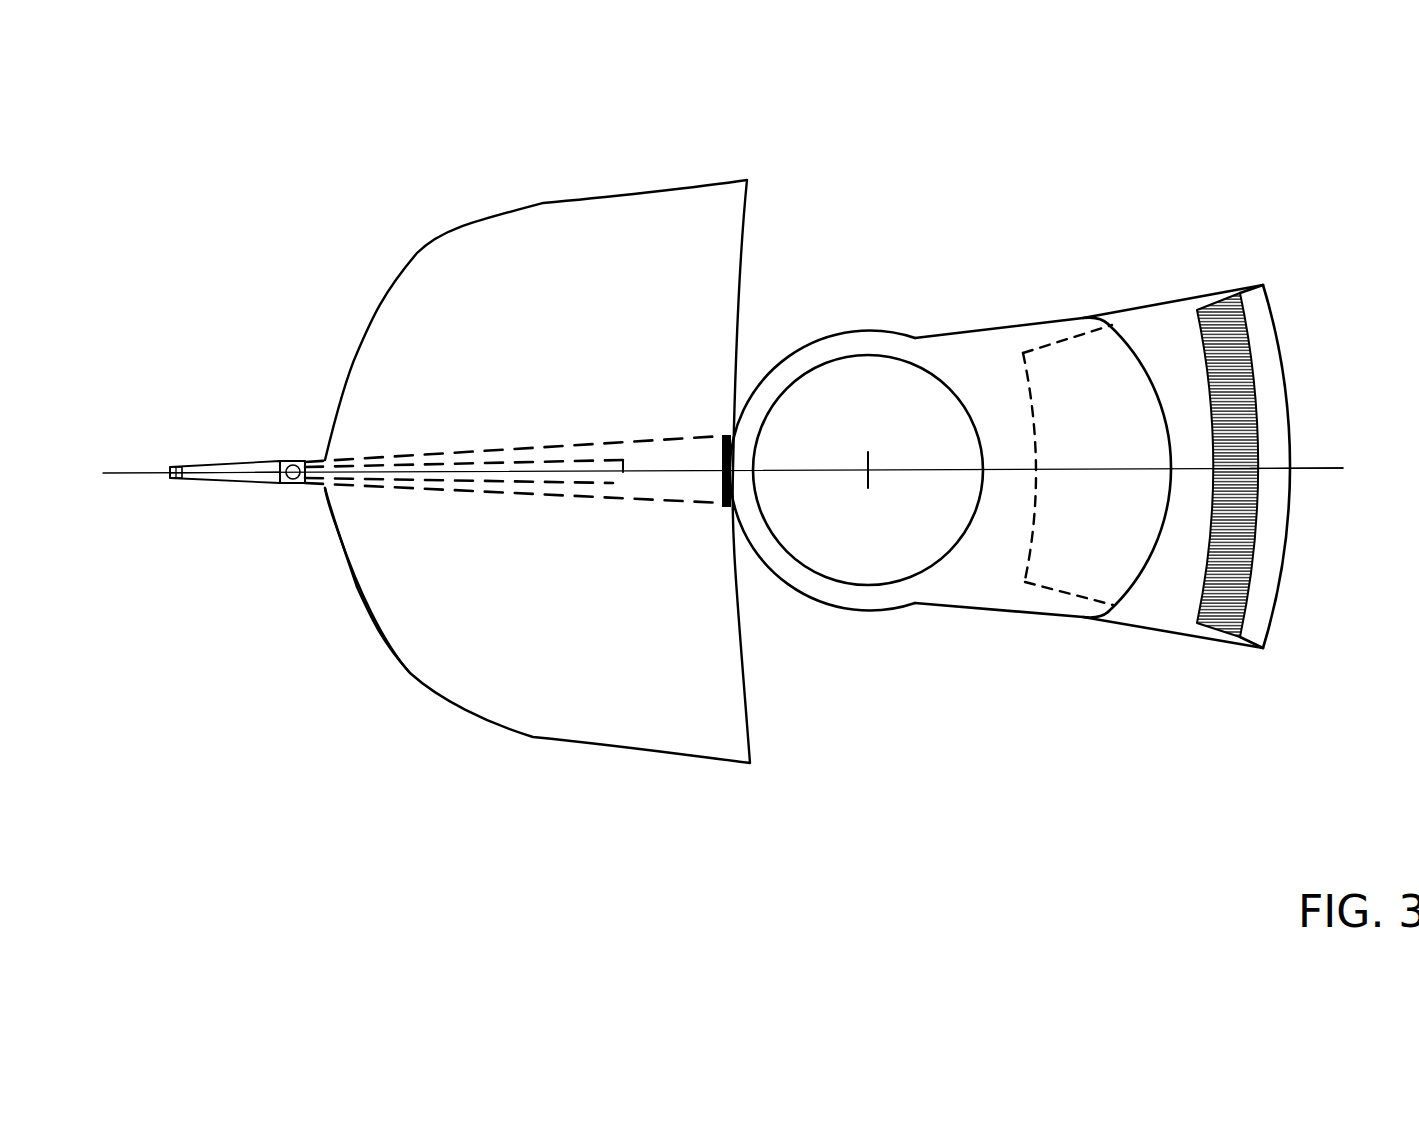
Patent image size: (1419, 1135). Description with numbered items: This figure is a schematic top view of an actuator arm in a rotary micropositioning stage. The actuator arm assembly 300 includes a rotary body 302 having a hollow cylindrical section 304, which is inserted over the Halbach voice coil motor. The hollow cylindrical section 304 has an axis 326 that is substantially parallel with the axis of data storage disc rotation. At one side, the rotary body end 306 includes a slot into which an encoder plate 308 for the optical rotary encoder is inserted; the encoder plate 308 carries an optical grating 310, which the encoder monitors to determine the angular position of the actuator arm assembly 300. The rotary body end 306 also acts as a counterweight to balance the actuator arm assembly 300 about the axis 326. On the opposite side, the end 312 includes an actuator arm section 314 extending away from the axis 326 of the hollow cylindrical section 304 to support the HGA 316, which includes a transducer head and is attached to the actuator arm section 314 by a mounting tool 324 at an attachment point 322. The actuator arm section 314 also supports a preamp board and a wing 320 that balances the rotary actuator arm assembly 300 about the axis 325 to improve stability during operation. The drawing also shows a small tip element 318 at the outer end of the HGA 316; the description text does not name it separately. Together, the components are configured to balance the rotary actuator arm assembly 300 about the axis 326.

The actuator arm assembly 300 is at (820, 832).
The rotary body 302 is at (873, 330).
The hollow cylindrical section 304 is at (840, 390).
The rotary body end 306 is at (1058, 262).
The encoder plate 308 is at (1253, 287).
The optical grating 310 is at (1210, 637).
The end 312 is at (464, 145).
The actuator arm section 314 is at (685, 425).
The HGA 316 is at (162, 385).
The rod tip 318 is at (170, 478).
The wing 320 is at (383, 647).
The attachment point 322 is at (290, 460).
The mounting tool 324 is at (560, 497).
The axis 325 is at (1343, 468).
The axis 326 is at (869, 478).